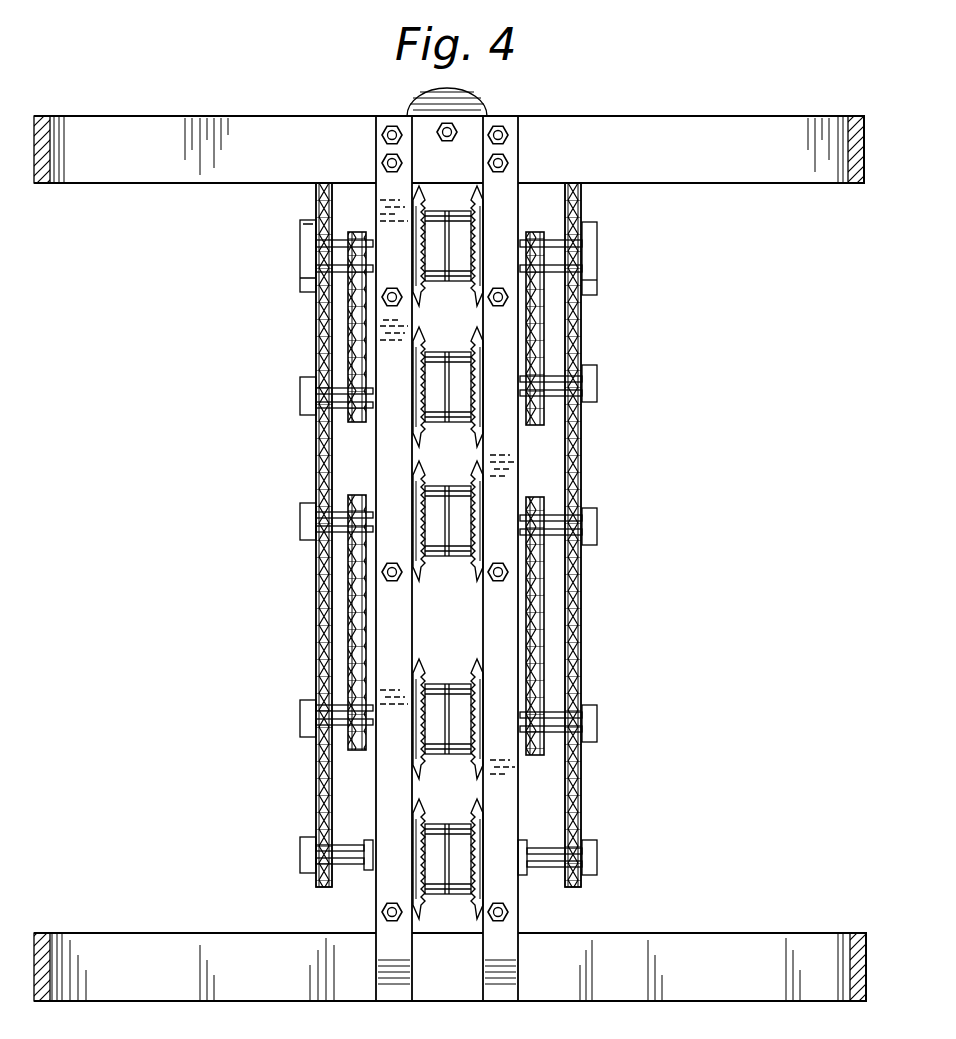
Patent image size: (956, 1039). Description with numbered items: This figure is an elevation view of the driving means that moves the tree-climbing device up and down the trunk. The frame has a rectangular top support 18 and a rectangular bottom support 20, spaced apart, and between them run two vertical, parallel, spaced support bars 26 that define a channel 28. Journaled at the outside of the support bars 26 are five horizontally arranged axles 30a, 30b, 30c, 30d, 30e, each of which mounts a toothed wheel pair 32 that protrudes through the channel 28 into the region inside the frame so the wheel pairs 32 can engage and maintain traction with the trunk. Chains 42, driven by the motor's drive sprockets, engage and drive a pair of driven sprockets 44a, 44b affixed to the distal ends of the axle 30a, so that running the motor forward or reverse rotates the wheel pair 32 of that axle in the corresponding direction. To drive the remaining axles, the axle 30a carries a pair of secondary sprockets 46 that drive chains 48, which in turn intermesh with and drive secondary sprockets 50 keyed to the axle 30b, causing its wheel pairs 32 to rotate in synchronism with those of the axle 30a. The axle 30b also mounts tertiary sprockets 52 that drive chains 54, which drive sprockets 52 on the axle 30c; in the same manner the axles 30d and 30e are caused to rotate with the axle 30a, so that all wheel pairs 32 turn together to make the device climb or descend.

The top support 18 is at (775, 178).
The bottom support 20 is at (668, 953).
The support bars 26 is at (376, 935).
The channel 28 is at (466, 637).
The axle 30a is at (340, 246).
The axle 30b is at (330, 418).
The axle 30c is at (348, 540).
The axle 30d is at (348, 712).
The axle 30e is at (348, 870).
The toothed wheel pairs 32 is at (445, 205).
The chains 42 is at (316, 208).
The driven sprocket 44a is at (582, 315).
The driven sprocket 44b is at (316, 312).
The secondary sprockets 46 is at (356, 232).
The chains 48 is at (348, 335).
The secondary sprockets 50 is at (355, 425).
The tertiary sprockets 52 is at (300, 380).
The chains 54 is at (316, 478).